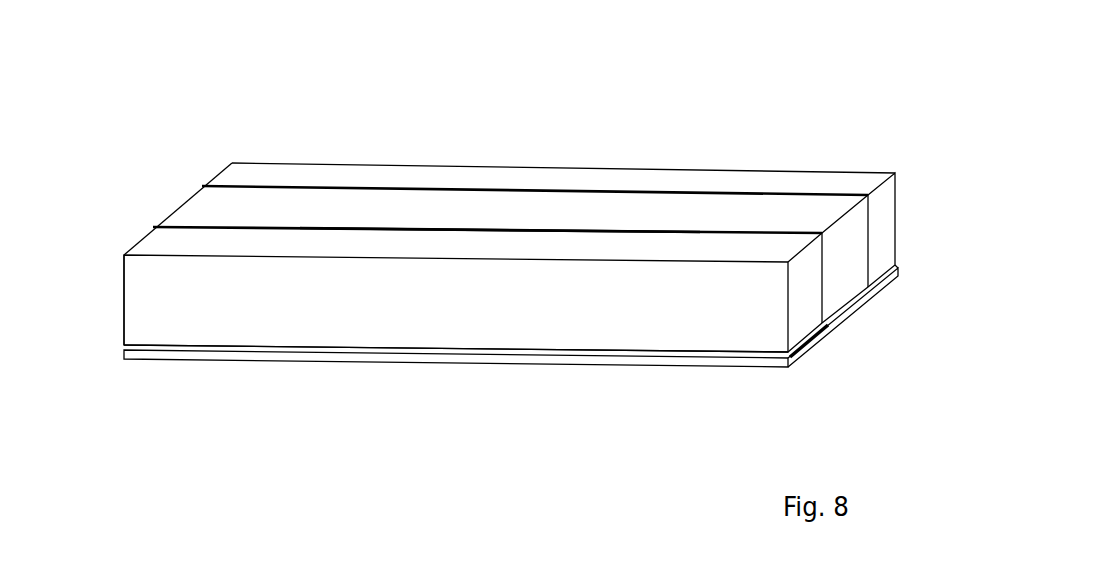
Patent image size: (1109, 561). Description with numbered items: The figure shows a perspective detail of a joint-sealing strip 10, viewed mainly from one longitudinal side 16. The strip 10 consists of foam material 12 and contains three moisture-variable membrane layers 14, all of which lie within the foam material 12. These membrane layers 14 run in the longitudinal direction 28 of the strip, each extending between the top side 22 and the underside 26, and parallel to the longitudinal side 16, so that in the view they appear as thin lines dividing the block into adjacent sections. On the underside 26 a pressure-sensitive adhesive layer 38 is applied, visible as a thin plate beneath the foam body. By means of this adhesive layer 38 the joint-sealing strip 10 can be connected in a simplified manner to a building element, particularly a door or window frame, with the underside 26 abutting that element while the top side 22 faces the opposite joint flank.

The joint-sealing strip 10 is at (509, 267).
The foam material 12 is at (205, 210).
The moisture-variable membrane layers 14 is at (545, 188).
The longitudinal side 16 is at (257, 337).
The top side 22 is at (452, 198).
The underside 26 is at (552, 360).
The longitudinal direction 28 is at (841, 125).
The pressure-sensitive adhesive layer 38 is at (185, 357).